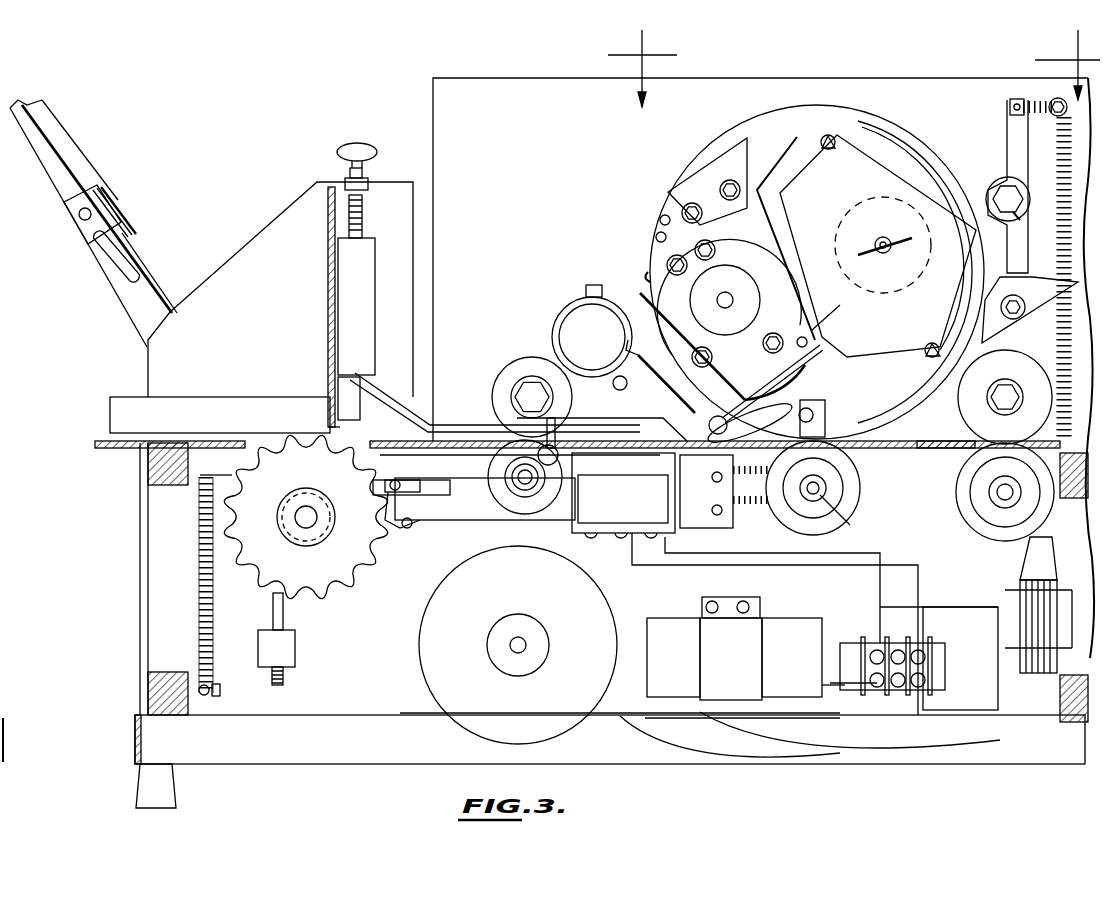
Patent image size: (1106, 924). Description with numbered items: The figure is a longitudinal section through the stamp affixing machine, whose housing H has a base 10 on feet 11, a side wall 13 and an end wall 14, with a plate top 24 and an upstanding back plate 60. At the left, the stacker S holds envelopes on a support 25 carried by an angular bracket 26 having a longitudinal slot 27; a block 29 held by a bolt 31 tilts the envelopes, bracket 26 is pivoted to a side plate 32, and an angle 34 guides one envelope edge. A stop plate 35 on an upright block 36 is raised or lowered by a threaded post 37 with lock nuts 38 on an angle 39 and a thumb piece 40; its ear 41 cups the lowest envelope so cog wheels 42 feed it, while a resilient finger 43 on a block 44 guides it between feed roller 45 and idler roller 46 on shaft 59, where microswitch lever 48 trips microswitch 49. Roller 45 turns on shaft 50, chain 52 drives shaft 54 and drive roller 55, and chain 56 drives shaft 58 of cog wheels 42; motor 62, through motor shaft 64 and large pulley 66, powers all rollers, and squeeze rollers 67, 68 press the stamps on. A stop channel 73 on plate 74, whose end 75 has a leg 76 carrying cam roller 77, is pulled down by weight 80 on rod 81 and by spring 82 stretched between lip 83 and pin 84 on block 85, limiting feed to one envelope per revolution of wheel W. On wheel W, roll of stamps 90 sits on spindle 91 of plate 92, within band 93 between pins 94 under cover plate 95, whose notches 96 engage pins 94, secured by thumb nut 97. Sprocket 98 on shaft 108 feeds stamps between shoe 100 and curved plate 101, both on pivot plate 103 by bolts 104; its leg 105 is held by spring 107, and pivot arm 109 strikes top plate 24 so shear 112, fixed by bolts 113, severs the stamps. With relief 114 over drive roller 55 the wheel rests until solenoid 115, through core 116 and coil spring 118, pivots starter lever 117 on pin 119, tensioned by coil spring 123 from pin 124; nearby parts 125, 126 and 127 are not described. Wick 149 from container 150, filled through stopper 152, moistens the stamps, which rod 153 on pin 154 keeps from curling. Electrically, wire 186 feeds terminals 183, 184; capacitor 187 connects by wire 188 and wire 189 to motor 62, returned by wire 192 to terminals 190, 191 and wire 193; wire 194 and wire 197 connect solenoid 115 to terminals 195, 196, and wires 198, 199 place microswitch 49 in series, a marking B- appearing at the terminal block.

The base 10 is at (190, 732).
The feet 11 is at (172, 792).
The side wall 13 is at (336, 717).
The end wall 14 is at (140, 572).
The top plate 24 is at (100, 440).
The support 25 is at (97, 200).
The angular bracket 26 is at (22, 112).
The longitudinal slot 27 is at (60, 150).
The block 29 is at (130, 222).
The bolt 31 is at (112, 192).
The plate 32 is at (275, 274).
The angle 34 is at (205, 405).
The front stop plate 35 is at (328, 295).
The upright block 36 is at (370, 320).
The threaded post 37 is at (362, 218).
The lock nuts 38 is at (368, 168).
The angle 39 is at (345, 182).
The thumb piece 40 is at (356, 144).
The projection or ear 41 is at (325, 425).
The cog wheels 42 is at (350, 598).
The resilient angular finger 43 is at (435, 410).
The block 44 is at (360, 410).
The feed roller 45 is at (500, 490).
The idler roller 46 is at (505, 378).
The microswitch lever 48 is at (556, 420).
The microswitch 49 is at (595, 530).
The shaft 50 is at (518, 476).
The endless chain 52 is at (751, 501).
The shaft 54 is at (823, 492).
The stamp wheel drive roller 55 is at (845, 490).
The chain 56 is at (408, 530).
The shaft 58 is at (298, 522).
The shaft 59 is at (535, 385).
The back plate 60 is at (520, 180).
The motor 62 is at (590, 660).
The motor shaft 64 is at (512, 645).
The large pulley 66 is at (905, 730).
The squeeze roller 67 is at (958, 490).
The squeeze roller 68 is at (960, 425).
The stop channel 73 is at (422, 452).
The plate 74 is at (482, 520).
The opposite end of plate 75 is at (690, 520).
The upwardly extending leg 76 is at (712, 418).
The cam roller 77 is at (750, 420).
The weight 80 is at (292, 655).
The vertical rod 81 is at (273, 607).
The spring 82 is at (199, 590).
The lip 83 is at (200, 478).
The pin 84 is at (220, 688).
The block 85 is at (170, 680).
The roll of stamps 90 is at (840, 228).
The spindle 91 is at (875, 243).
The plate 92 is at (797, 140).
The semicircular band 93 is at (905, 140).
The pins 94 is at (830, 135).
The cover plate 95 is at (910, 183).
The notches 96 is at (828, 150).
The thumb nut 97 is at (915, 240).
The sprocket 98 is at (748, 335).
The shoe 100 is at (760, 300).
The curved plate 101 is at (725, 240).
The pivot plate 103 is at (785, 368).
The bolts 104 is at (716, 250).
The inwardly extending leg 105 is at (810, 342).
The spring 107 is at (842, 309).
The shaft 108 is at (745, 290).
The pivot arm 109 is at (648, 274).
The shear 112 is at (672, 192).
The bolts 113 is at (692, 203).
The relief 114 is at (832, 436).
The solenoid 115 is at (1005, 590).
The core 116 is at (1030, 555).
The starter lever 117 is at (1035, 308).
The coil spring 118 is at (1006, 433).
The pin 119 is at (1020, 303).
The coil spring 123 is at (1060, 155).
The pin 124 is at (1060, 110).
The hex screw 125 is at (1008, 221).
The pin 126 is at (1039, 226).
The spring 127 is at (1012, 102).
The wick 149 is at (622, 330).
The container 150 is at (553, 330).
The stopper 152 is at (590, 285).
The angular metal rod 153 is at (660, 376).
The pin 154 is at (624, 396).
The center terminal 183 is at (880, 695).
The center terminal 184 is at (900, 648).
The wire 186 is at (895, 600).
The capacitor 187 is at (775, 630).
The wire 188 is at (768, 720).
The wire 189 is at (627, 680).
The terminal 190 is at (925, 678).
The terminal 191 is at (925, 655).
The wire 192 is at (701, 734).
The wire 193 is at (908, 687).
The wire 194 is at (945, 598).
The terminal 195 is at (803, 657).
The terminal 196 is at (875, 650).
The wire 197 is at (998, 690).
The wire 198 is at (640, 568).
The wire 199 is at (884, 556).
The stamp dispensing and affixing wheel W is at (748, 100).
The envelope hopper or stacker S is at (85, 242).
The housing H is at (380, 766).
The negative terminal B- is at (968, 703).